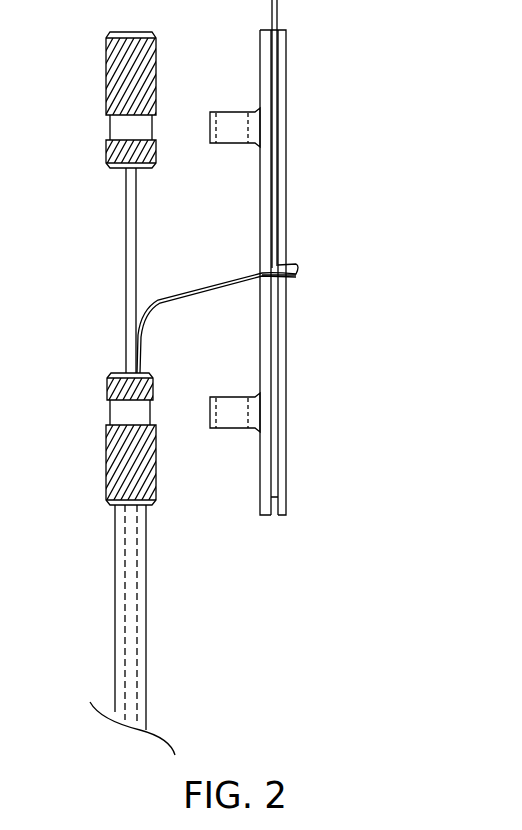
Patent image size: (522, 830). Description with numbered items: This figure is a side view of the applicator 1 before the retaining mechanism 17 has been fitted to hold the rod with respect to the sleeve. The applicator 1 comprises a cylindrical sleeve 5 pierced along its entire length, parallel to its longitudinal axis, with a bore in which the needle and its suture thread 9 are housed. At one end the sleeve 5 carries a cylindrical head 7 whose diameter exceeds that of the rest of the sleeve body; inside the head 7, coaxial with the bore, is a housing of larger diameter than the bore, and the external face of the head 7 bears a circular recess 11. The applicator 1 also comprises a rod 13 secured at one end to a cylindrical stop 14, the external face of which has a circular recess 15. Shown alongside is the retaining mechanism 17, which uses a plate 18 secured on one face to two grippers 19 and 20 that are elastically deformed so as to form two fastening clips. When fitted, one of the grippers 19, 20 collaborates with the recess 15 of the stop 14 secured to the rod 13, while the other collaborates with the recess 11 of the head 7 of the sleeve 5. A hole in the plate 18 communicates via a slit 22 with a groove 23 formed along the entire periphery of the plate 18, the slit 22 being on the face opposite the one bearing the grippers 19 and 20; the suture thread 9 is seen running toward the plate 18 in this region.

The applicator 1 is at (229, 636).
The cylindrical sleeve 5 is at (133, 628).
The cylindrical head 7 is at (107, 483).
The suture thread 9 is at (225, 275).
The circular recess 11 is at (126, 412).
The rod 13 is at (131, 250).
The cylindrical stop 14 is at (112, 50).
The circular recess 15 is at (127, 127).
The retaining mechanism 17 is at (365, 431).
The plate 18 is at (286, 360).
The gripper 19 is at (224, 110).
The gripper 20 is at (228, 420).
The slit 22 is at (290, 278).
The groove 23 is at (274, 517).